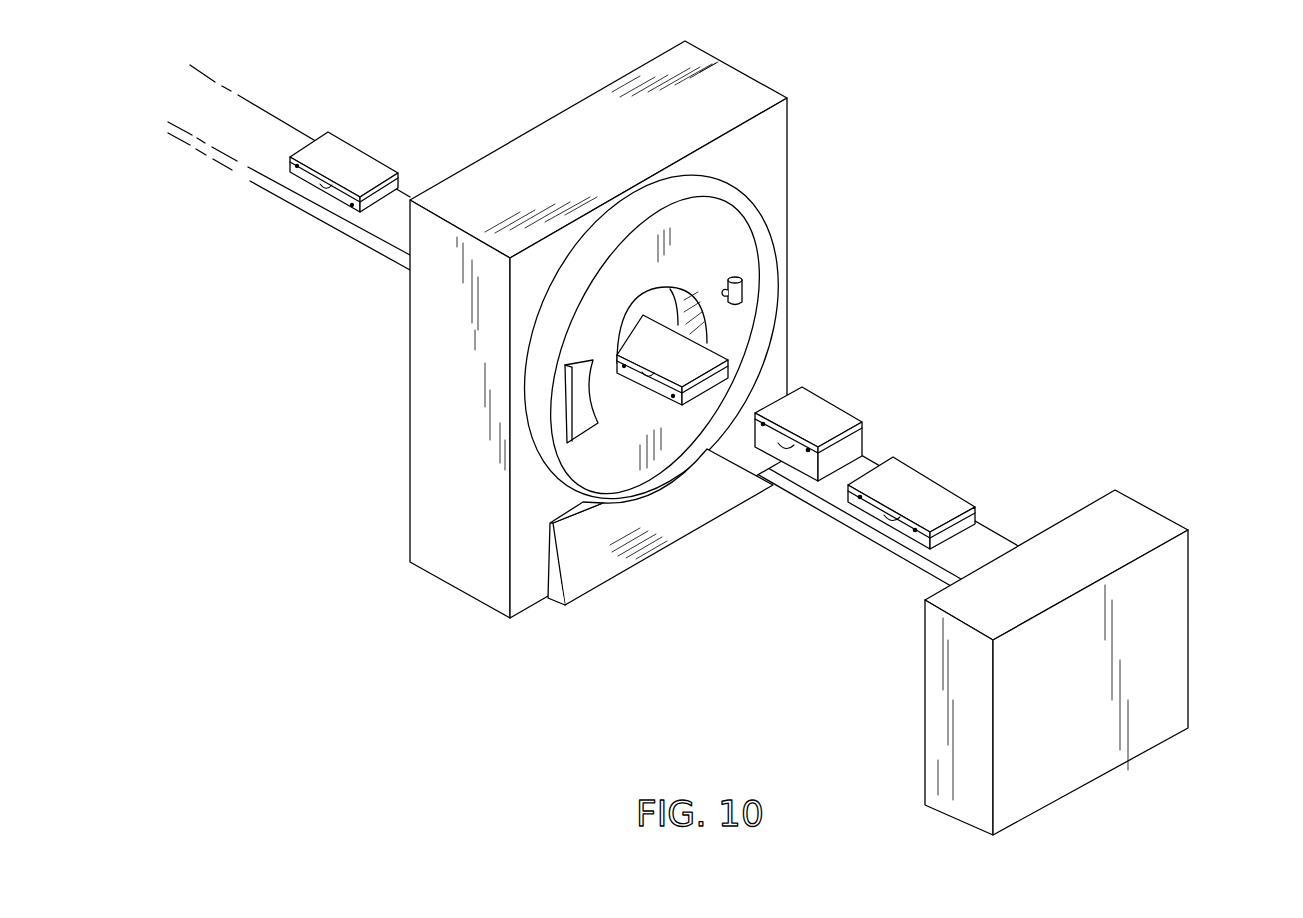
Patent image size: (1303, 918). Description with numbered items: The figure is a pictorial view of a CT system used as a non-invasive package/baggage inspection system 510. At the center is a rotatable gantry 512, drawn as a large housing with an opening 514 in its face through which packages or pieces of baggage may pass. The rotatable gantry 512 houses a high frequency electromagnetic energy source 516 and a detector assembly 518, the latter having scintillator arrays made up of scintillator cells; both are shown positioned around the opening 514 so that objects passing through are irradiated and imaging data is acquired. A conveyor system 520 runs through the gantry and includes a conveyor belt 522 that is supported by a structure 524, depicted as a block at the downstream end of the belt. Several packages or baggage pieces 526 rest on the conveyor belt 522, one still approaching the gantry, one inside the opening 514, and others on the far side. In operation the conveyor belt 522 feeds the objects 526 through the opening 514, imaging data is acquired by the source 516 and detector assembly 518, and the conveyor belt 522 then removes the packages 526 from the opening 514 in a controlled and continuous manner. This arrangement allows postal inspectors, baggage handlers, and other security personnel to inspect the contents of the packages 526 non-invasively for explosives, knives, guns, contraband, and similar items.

The package/baggage inspection system 510 is at (736, 329).
The rotatable gantry 512 is at (727, 237).
The opening 514 is at (686, 295).
The high frequency electromagnetic energy source 516 is at (744, 293).
The detector assembly 518 is at (587, 370).
The conveyor system 520 is at (711, 450).
The conveyor belt 522 is at (382, 229).
The structure 524 is at (1173, 621).
The packages or baggage pieces 526 is at (357, 158).